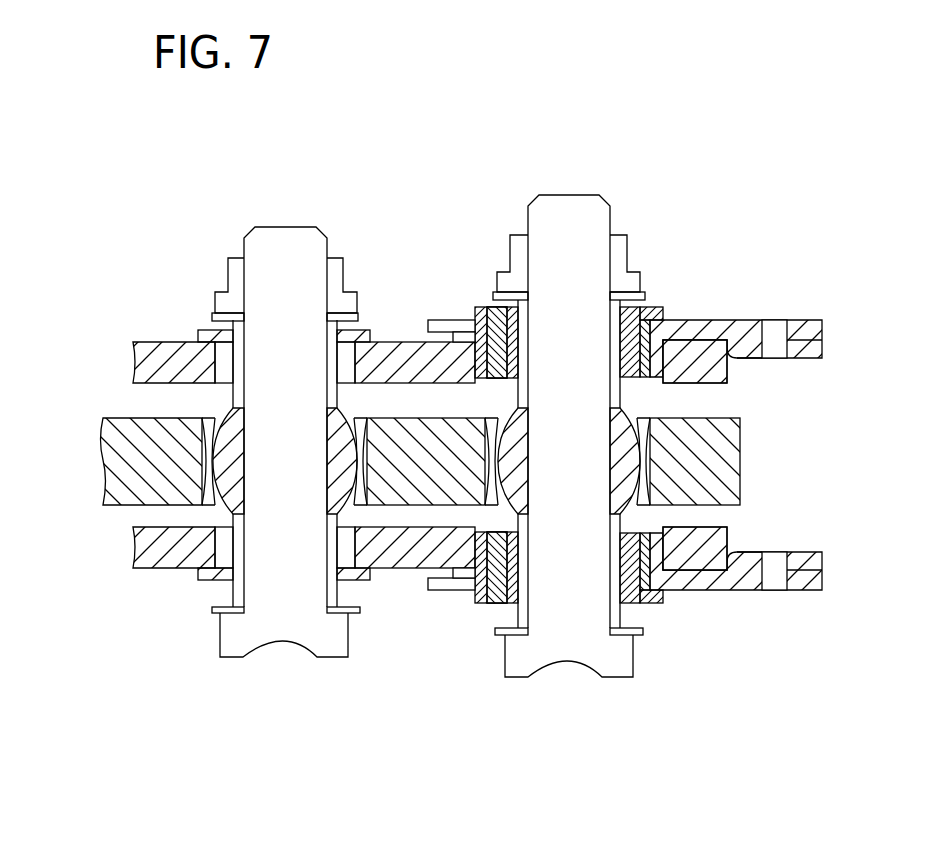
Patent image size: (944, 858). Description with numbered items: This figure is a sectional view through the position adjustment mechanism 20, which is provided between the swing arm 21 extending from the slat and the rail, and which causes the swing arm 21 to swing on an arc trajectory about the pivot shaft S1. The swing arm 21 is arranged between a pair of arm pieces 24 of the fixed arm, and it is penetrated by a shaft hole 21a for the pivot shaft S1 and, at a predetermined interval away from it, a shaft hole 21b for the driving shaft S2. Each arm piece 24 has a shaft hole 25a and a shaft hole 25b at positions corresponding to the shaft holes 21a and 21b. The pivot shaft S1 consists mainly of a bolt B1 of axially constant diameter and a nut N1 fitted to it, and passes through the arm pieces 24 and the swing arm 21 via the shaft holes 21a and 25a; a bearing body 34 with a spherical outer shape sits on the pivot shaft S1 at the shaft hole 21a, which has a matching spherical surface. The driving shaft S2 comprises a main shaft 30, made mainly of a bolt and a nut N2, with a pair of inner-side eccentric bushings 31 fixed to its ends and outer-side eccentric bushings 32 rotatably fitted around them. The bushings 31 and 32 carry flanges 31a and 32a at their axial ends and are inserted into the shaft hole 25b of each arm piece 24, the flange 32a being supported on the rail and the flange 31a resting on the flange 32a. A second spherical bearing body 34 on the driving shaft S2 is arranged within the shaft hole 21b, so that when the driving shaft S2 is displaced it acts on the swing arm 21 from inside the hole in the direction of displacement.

The position adjustment mechanism 20 is at (441, 207).
The swing arm 21 is at (103, 470).
The shaft hole 21a is at (215, 475).
The shaft hole 21b is at (500, 465).
The arm piece 24 is at (140, 355).
The shaft hole 25a is at (222, 335).
The shaft hole 25b is at (492, 320).
The main shaft 30 is at (740, 462).
The inner-side eccentric bushing 31 is at (728, 380).
The flange 31a is at (648, 307).
The outer-side eccentric bushing 32 is at (733, 360).
The flange 32a is at (673, 327).
The bearing body 34 is at (370, 355).
The pivot shaft S1 is at (288, 220).
The driving shaft S2 is at (566, 193).
The bolt B1 is at (240, 235).
The nut N1 is at (228, 270).
The nut N2 is at (628, 258).